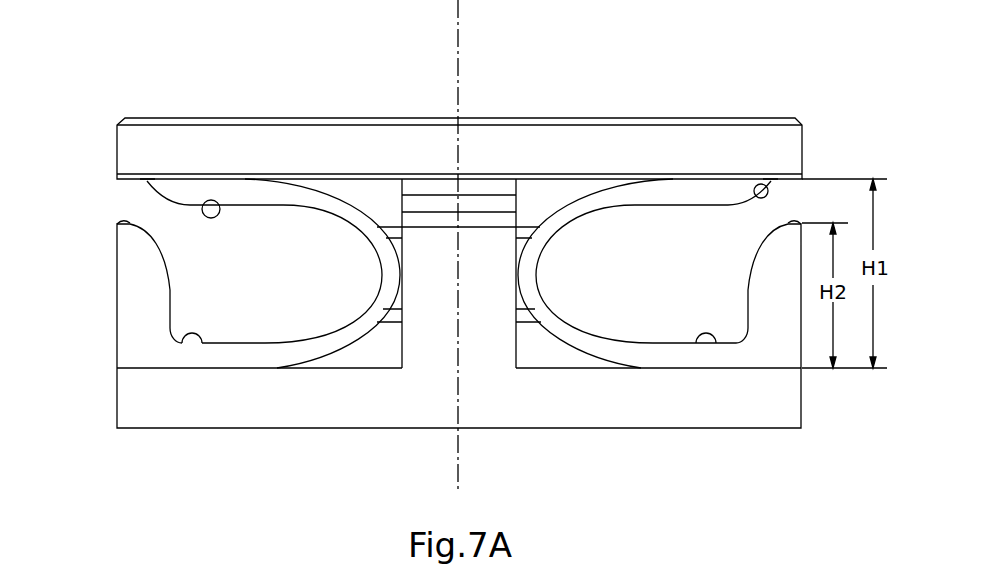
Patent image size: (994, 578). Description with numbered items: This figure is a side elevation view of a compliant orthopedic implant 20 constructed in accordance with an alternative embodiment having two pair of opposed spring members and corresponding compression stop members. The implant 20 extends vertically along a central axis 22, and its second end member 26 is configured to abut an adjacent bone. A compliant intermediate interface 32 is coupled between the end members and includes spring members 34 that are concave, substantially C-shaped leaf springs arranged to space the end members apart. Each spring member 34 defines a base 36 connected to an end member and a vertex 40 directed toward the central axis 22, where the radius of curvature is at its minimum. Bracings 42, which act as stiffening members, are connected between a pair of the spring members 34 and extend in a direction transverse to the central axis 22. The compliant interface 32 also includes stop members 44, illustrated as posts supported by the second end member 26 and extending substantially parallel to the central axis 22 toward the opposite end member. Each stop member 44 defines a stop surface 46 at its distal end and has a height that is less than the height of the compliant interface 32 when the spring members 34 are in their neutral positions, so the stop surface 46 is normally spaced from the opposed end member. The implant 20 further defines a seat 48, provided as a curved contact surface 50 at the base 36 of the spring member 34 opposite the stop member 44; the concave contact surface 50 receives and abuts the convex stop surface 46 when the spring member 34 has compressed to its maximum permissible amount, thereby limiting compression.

The compliant orthopedic implant 20 is at (157, 64).
The central axis 22 is at (463, 42).
The second end member 26 is at (258, 405).
The compliant intermediate interface 32 is at (382, 274).
The spring member 34 is at (397, 243).
The base 36 is at (218, 203).
The vertex 40 is at (396, 243).
The bracing 42 is at (390, 326).
The stop member 44 is at (143, 320).
The stop surface 46 is at (130, 222).
The seat 48 is at (147, 182).
The curved contact surface 50 is at (148, 193).